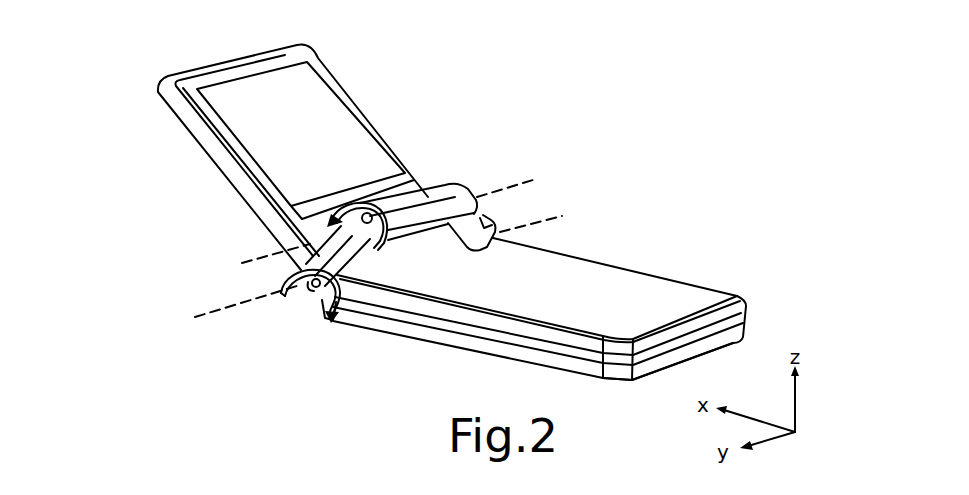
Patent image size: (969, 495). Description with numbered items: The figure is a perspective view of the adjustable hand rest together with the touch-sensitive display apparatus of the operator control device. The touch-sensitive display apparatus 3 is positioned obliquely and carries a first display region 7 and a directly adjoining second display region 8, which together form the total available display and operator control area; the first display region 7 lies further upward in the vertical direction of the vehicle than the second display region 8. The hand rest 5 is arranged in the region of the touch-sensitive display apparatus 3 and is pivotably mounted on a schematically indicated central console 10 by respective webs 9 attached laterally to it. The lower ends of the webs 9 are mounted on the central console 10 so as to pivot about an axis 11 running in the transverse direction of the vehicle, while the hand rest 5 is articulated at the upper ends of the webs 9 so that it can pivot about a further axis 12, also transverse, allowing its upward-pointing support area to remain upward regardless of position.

The touch-sensitive display apparatus 3 is at (182, 174).
The adjustable hand rest 5 is at (465, 188).
The first display region 7 is at (325, 122).
The second display region 8 is at (413, 173).
The webs 9 is at (492, 218).
The central console 10 is at (715, 245).
The axis 11 is at (237, 306).
The further axis 12 is at (272, 257).